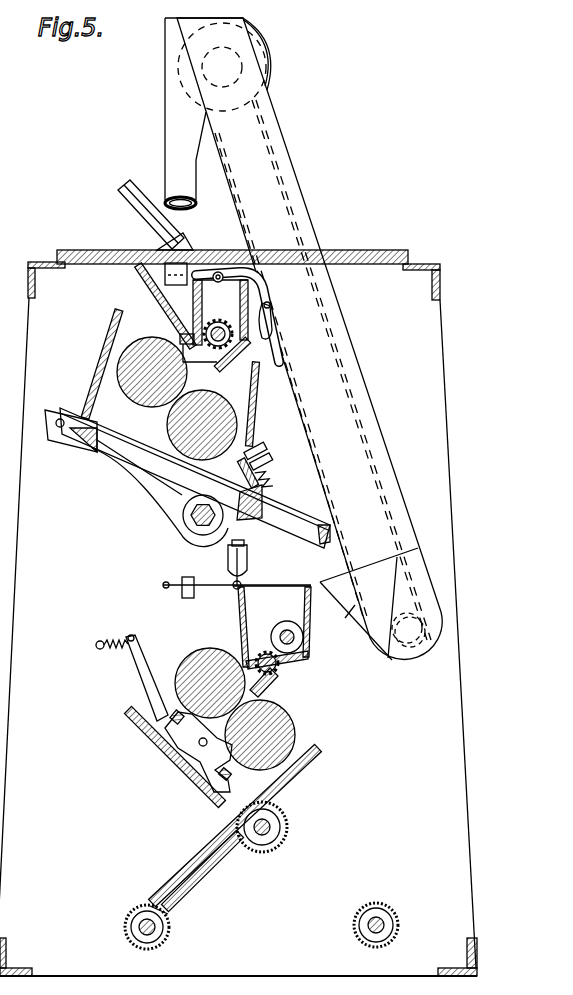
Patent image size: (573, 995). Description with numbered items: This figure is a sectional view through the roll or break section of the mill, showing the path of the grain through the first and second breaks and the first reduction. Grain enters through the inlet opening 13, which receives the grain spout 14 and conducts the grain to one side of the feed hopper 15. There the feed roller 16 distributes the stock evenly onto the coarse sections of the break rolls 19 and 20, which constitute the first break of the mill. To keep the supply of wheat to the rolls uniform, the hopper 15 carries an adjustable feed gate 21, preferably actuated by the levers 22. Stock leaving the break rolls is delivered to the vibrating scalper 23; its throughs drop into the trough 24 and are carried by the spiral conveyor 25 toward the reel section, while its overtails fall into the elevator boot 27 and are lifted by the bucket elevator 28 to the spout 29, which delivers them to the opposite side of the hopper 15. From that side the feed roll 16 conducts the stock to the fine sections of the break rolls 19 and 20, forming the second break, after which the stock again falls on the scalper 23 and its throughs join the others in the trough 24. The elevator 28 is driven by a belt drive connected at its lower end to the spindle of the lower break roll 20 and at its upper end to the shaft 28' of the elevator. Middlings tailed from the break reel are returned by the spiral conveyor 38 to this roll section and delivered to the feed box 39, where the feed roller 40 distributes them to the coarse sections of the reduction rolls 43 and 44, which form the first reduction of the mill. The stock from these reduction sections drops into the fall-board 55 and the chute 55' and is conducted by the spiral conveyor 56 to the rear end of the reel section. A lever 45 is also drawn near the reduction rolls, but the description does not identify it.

The inlet opening 13 is at (188, 246).
The grain spout 14 is at (128, 198).
The feed hopper 15 is at (165, 275).
The feed roller 16 is at (218, 330).
The break roll 19 is at (140, 388).
The break roll 20 is at (182, 424).
The adjustable feed gate 21 is at (160, 300).
The levers 22 is at (272, 333).
The vibrating scalper 23 is at (308, 515).
The trough 24 is at (140, 500).
The spiral conveyor 25 is at (195, 522).
The elevator boot 27 is at (288, 627).
The bucket elevator 28 is at (303, 339).
The shaft of the elevator 28' is at (301, 335).
The spout 29 is at (165, 163).
The spiral conveyor 38 is at (292, 646).
The feed box 39 is at (240, 620).
The feed roller 40 is at (272, 670).
The reduction roll 43 is at (219, 693).
The reduction roll 44 is at (294, 730).
The lever 45 is at (187, 668).
The fall-board 55 is at (175, 756).
The chute 55' is at (235, 829).
The spiral conveyor 56 is at (137, 928).